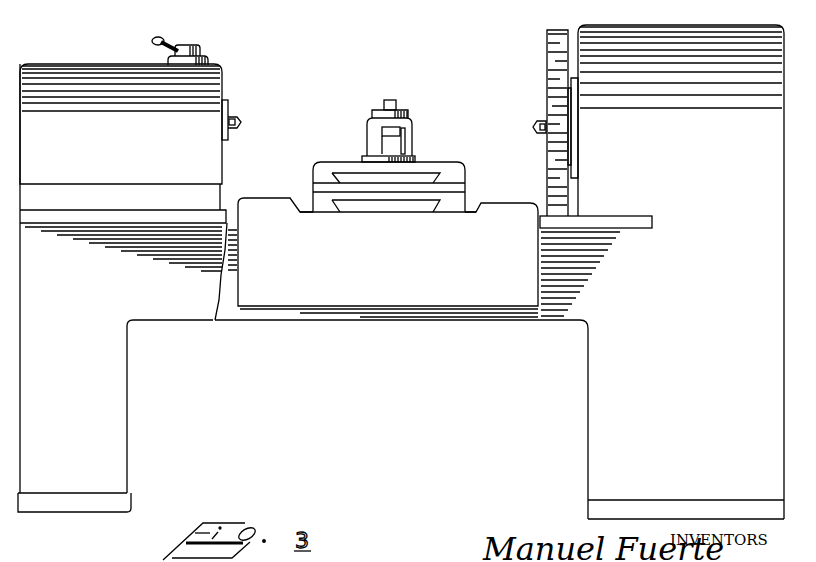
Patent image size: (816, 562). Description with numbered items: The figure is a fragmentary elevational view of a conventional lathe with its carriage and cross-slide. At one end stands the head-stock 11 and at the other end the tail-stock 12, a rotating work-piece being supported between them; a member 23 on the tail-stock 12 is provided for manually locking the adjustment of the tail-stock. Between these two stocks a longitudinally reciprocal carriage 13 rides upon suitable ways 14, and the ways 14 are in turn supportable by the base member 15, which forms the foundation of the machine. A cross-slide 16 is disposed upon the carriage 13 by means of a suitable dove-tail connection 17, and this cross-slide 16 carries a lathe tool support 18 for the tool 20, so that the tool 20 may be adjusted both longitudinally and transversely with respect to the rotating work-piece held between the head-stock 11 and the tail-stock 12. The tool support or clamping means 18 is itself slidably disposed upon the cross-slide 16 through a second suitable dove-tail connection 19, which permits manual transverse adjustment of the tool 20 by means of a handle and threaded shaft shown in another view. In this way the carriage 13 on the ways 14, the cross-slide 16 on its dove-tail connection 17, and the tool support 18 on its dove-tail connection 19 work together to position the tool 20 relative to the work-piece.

The head-stock 11 is at (533, 123).
The tail-stock 12 is at (242, 121).
The carriage 13 is at (476, 297).
The ways 14 is at (617, 222).
The base member 15 is at (606, 457).
The cross-slide 16 is at (457, 203).
The dove-tail connection 17 is at (437, 204).
The tool support 18 is at (414, 130).
The dove-tail connection 19 is at (343, 163).
The tool 20 is at (390, 142).
The locking member 23 is at (167, 38).